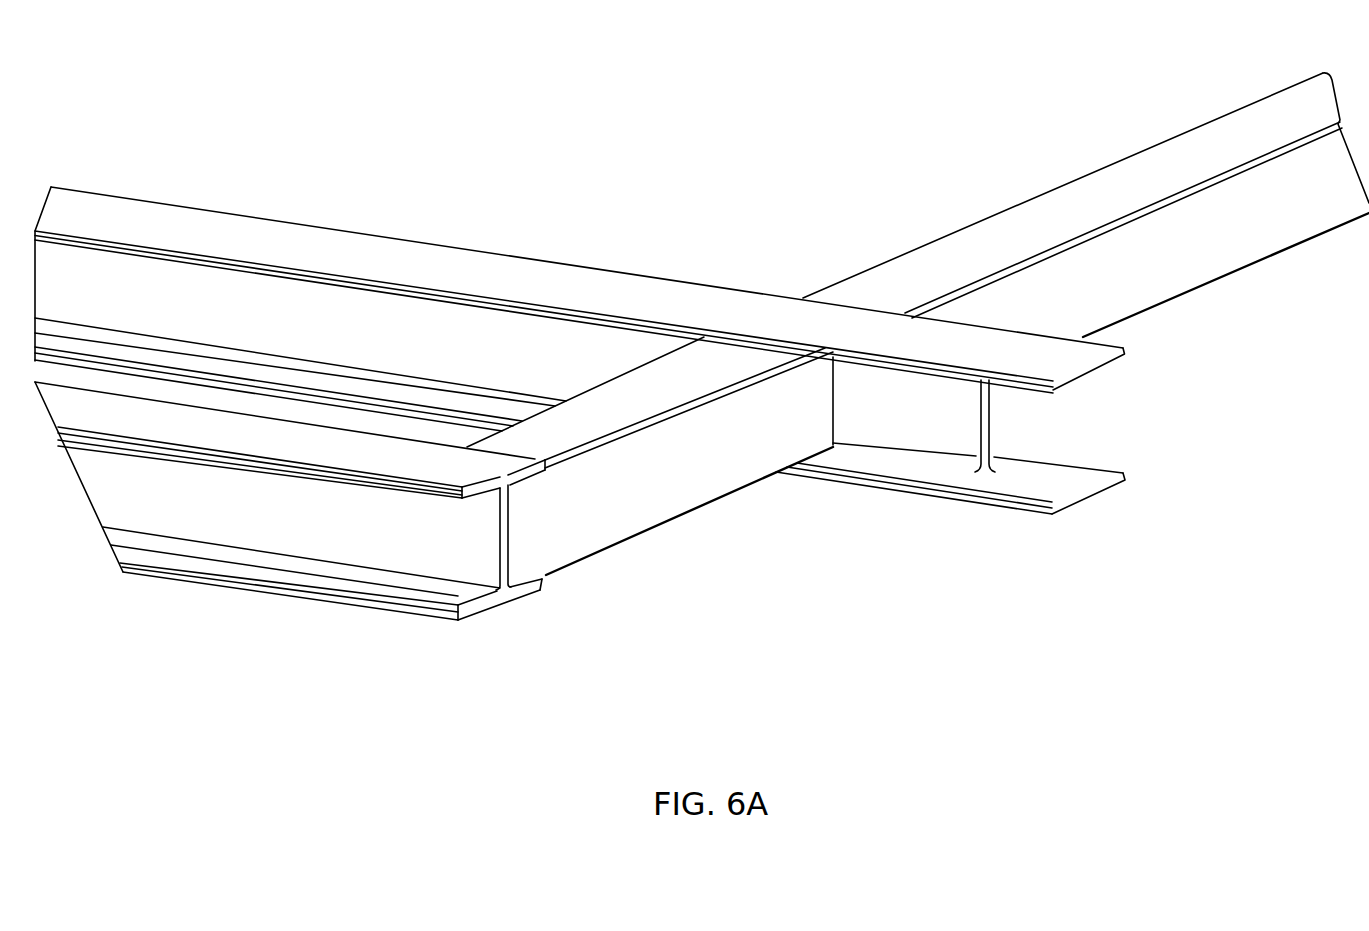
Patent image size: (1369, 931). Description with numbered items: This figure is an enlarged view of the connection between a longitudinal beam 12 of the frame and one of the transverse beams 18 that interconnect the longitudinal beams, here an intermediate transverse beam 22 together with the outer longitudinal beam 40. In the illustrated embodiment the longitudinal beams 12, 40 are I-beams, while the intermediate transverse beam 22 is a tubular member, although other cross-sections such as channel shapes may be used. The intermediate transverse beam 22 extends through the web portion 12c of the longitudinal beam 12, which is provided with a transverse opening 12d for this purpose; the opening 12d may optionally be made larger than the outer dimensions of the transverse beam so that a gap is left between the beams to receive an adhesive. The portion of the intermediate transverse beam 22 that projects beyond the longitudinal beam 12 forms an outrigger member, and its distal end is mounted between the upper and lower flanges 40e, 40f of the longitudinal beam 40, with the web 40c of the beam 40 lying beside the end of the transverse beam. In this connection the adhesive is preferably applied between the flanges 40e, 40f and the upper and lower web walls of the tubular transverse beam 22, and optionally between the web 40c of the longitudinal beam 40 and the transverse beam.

The longitudinal beam 12 is at (695, 275).
The web portion 12c is at (947, 412).
The transverse opening 12d is at (835, 398).
The transverse beam 18 is at (600, 558).
The intermediate transverse beam 22 is at (650, 504).
The longitudinal beam 40 is at (333, 603).
The web 40c is at (498, 546).
The flange 40e is at (538, 464).
The flange 40f is at (528, 594).